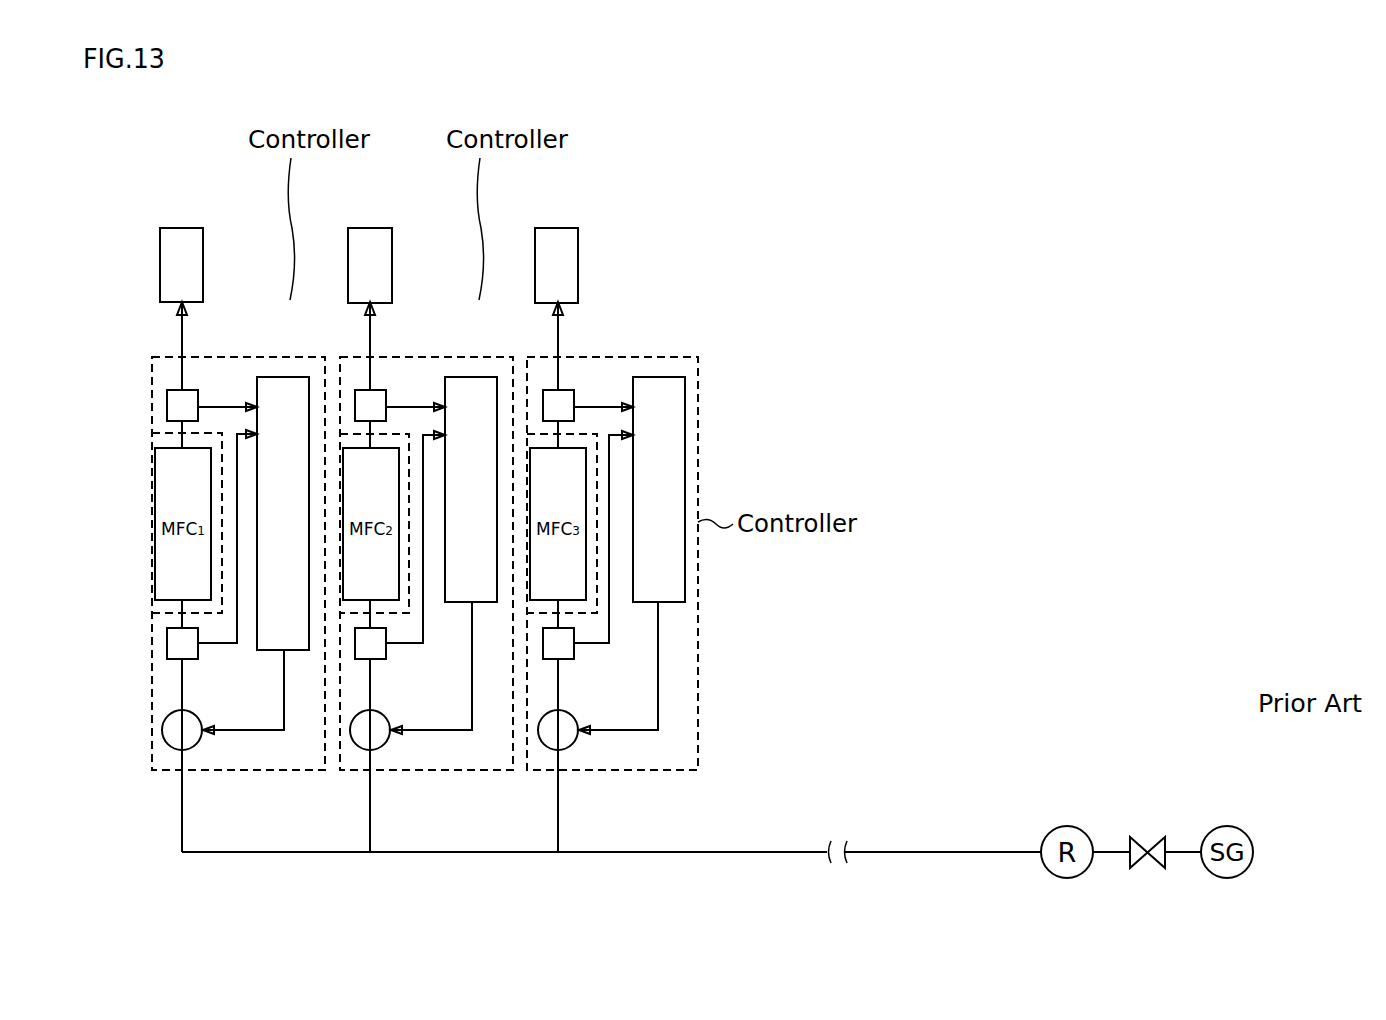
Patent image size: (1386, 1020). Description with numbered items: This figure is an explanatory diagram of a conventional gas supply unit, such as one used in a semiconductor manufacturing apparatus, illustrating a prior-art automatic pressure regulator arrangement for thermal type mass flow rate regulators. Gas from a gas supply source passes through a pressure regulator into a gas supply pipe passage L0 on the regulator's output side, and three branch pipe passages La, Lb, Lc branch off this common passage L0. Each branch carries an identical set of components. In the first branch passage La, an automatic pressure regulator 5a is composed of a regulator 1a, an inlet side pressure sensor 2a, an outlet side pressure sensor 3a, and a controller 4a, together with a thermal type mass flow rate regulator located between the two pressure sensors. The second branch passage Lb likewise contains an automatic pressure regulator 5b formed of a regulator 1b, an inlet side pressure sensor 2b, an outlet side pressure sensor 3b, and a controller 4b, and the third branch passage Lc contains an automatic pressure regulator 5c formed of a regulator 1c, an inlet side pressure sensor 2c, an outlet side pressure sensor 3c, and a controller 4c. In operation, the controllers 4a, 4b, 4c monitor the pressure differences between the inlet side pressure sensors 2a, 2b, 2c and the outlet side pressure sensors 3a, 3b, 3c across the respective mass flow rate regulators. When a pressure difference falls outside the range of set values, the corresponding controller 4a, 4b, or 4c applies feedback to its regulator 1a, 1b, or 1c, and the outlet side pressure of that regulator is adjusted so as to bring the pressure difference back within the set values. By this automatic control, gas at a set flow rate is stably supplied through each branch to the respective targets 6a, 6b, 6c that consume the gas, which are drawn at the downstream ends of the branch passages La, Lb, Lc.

The regulator 1a is at (198, 742).
The regulator 1b is at (386, 742).
The regulator 1c is at (574, 742).
The inlet side pressure sensor 2a is at (198, 652).
The inlet side pressure sensor 2b is at (386, 652).
The inlet side pressure sensor 2c is at (574, 652).
The outlet side pressure sensor 3a is at (196, 389).
The outlet side pressure sensor 3b is at (384, 390).
The outlet side pressure sensor 3c is at (571, 390).
The controller 4a is at (283, 376).
The controller 4b is at (472, 376).
The controller 4c is at (659, 376).
The automatic pressure regulator 5a is at (295, 770).
The automatic pressure regulator 5b is at (472, 770).
The automatic pressure regulator 5c is at (670, 770).
The target 6a is at (180, 228).
The target 6b is at (368, 228).
The target 6c is at (556, 228).
The branch pipe passage La is at (183, 812).
The branch pipe passage Lb is at (371, 812).
The branch pipe passage Lc is at (559, 812).
The gas supply pipe passage L0 is at (748, 852).